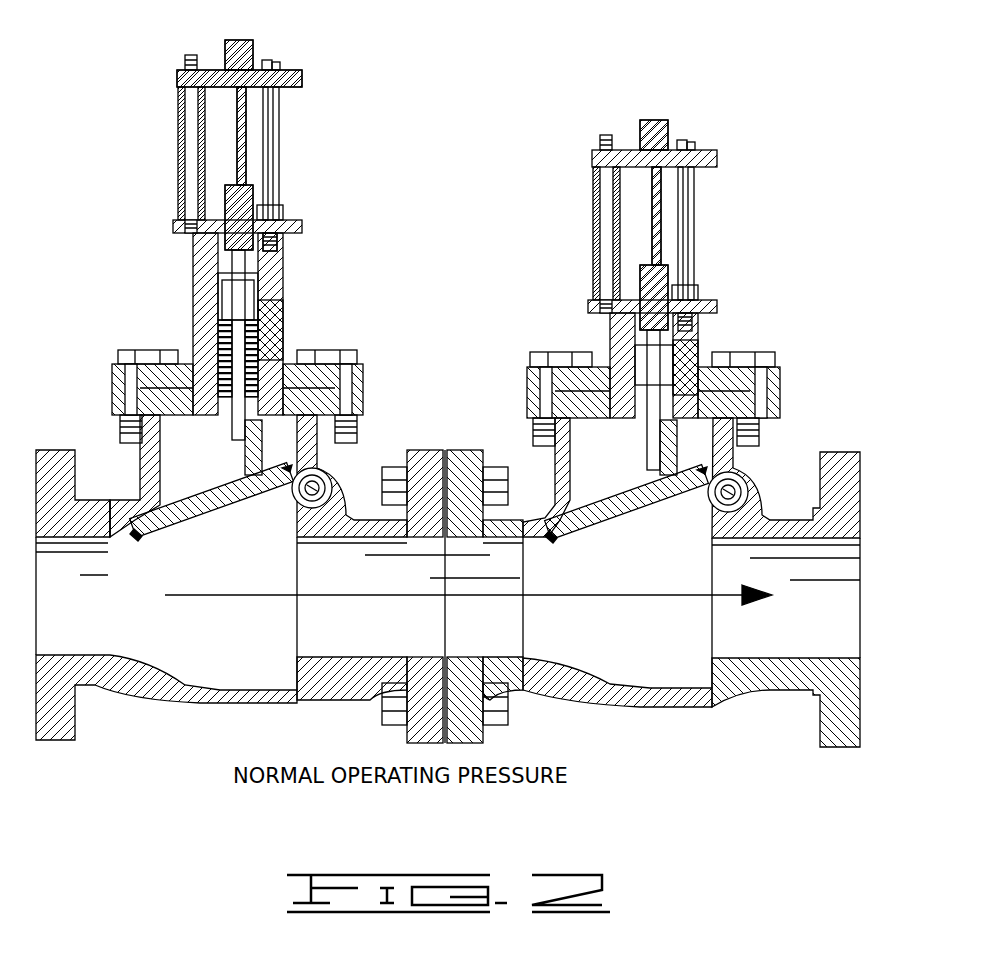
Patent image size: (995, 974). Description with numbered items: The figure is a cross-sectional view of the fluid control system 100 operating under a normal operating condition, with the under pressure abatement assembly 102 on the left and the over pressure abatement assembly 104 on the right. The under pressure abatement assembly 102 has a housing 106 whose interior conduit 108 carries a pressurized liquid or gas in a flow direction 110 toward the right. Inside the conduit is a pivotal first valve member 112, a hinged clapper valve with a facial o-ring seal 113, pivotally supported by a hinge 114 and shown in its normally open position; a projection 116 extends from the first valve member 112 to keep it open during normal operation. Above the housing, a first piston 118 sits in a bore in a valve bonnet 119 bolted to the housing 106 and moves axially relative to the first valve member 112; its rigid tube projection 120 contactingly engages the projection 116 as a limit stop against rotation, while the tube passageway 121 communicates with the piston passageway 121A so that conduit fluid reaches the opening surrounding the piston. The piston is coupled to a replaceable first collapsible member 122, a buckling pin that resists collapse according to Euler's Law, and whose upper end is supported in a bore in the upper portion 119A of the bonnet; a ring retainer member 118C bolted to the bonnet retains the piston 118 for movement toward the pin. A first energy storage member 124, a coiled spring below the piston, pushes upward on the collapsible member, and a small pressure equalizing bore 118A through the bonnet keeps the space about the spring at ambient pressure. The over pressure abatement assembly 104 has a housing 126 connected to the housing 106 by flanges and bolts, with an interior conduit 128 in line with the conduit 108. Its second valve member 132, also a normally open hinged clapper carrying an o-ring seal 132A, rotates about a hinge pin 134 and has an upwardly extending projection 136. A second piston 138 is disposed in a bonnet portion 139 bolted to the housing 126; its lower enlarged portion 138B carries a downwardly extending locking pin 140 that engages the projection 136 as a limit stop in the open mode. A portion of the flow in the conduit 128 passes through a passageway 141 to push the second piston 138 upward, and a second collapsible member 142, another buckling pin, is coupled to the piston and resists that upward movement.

The fluid control system 100 is at (150, 142).
The under pressure abatement assembly 102 is at (170, 91).
The over pressure abatement assembly 104 is at (728, 182).
The housing 106 is at (160, 690).
The interior conduit 108 is at (207, 660).
The flow direction 110 is at (253, 595).
The first valve member 112 is at (205, 545).
The facial o-ring seal 113 is at (135, 540).
The hinge 114 is at (290, 505).
The projection 116 is at (262, 440).
The first piston 118 is at (225, 258).
The pressure equalizing bore 118A is at (277, 337).
The ring retainer member 118C is at (283, 247).
The valve bonnet 119 is at (278, 310).
The upper portion of the valve bonnet 119A is at (283, 72).
The rigid tube projection 120 is at (230, 438).
The tube passageway 121 is at (236, 470).
The piston passageway 121A is at (260, 287).
The first collapsible member 122 is at (243, 131).
The first energy storage member 124 is at (220, 332).
The housing 126 is at (687, 710).
The interior conduit 128 is at (640, 657).
The second valve member 132 is at (625, 540).
The o-ring seal 132A is at (553, 540).
The hinge pin 134 is at (705, 510).
The projection 136 is at (680, 445).
The second piston 138 is at (612, 320).
The lower enlarged portion 138B is at (695, 365).
The valve bonnet portion 139 is at (700, 332).
The locking pin 140 is at (660, 462).
The passageway 141 is at (645, 432).
The second collapsible member 142 is at (655, 215).